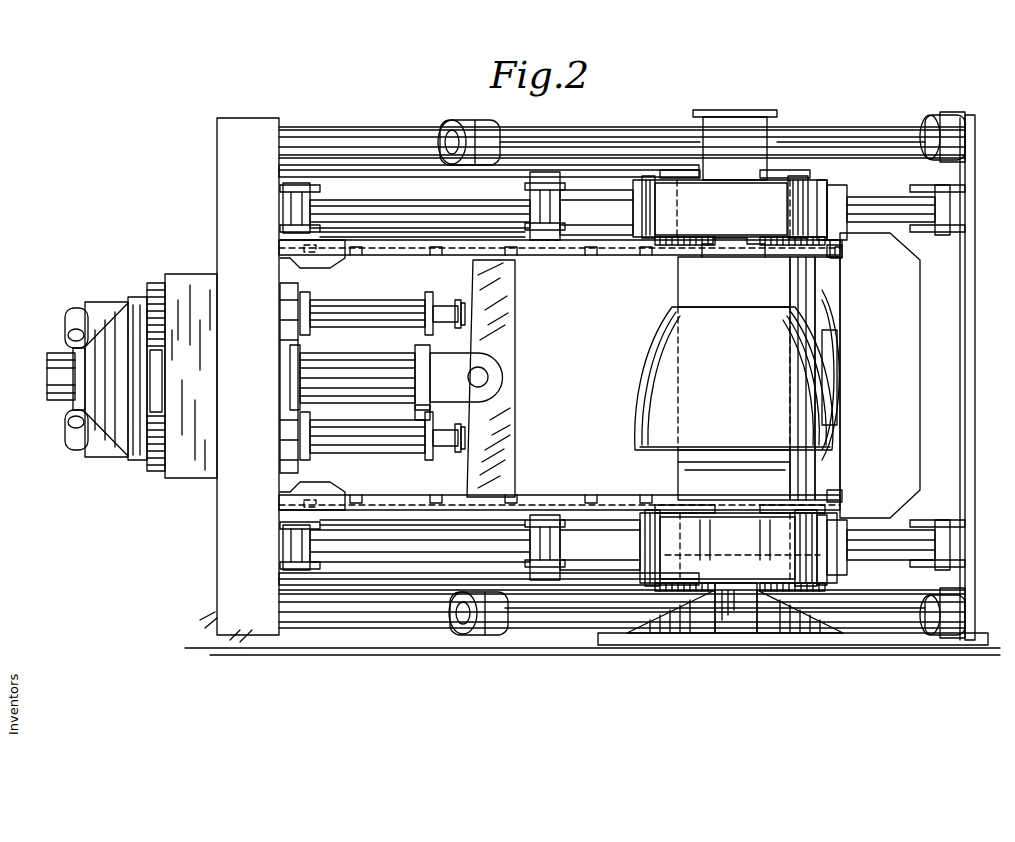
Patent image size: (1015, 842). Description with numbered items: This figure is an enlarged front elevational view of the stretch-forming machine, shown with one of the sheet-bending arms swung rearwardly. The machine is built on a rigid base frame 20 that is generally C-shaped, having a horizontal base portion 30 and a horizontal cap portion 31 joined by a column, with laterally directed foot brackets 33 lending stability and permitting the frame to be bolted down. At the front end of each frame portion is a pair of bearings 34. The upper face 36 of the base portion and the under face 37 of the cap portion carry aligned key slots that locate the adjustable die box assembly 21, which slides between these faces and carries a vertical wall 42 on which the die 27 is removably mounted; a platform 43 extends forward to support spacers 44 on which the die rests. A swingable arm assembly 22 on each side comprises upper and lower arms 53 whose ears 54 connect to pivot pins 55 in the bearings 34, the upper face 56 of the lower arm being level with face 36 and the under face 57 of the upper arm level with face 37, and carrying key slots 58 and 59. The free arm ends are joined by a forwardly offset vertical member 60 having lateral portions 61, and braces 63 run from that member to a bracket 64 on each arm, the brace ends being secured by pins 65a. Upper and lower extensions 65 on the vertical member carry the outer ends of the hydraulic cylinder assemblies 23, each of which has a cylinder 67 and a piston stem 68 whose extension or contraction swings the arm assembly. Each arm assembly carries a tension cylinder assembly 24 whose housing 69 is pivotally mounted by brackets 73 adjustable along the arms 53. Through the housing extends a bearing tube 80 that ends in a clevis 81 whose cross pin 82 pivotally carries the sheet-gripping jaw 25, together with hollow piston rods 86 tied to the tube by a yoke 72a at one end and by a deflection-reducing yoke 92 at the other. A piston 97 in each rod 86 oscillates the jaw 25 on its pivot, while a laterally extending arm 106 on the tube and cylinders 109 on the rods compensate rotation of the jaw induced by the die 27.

The rigid base frame 20 is at (757, 108).
The adjustable die box assembly 21 is at (678, 286).
The swingable arm assembly 22 is at (975, 330).
The hydraulic cylinder assembly 23 is at (477, 130).
The tension cylinder assembly 24 is at (203, 272).
The sheet-gripping jaw 25 is at (508, 420).
The die 27 is at (652, 372).
The base portion 30 is at (735, 635).
The cap portion 31 is at (735, 125).
The foot bracket 33 is at (655, 645).
The bearing 34 is at (825, 185).
The upper face of base portion 36 is at (770, 494).
The under face of cap portion 37 is at (715, 246).
The vertical wall 42 is at (688, 292).
The platform 43 is at (725, 504).
The spacer 44 is at (690, 468).
The arm 53 is at (382, 160).
The ear 54 is at (672, 245).
The pivot pin 55 is at (668, 208).
The upper face of lower arm 56 is at (583, 502).
The under face of upper arm 57 is at (556, 256).
The key slot 58 is at (427, 507).
The key slot 59 is at (425, 252).
The vertical member 60 is at (220, 209).
The lateral portion 61 is at (860, 180).
The brace 63 is at (450, 200).
The bracket 64 is at (600, 238).
The extension 65 is at (970, 118).
The pin 65a is at (300, 212).
The cylinder 67 is at (608, 130).
The stem 68 is at (338, 135).
The housing 69 is at (190, 478).
The yoke 72a is at (128, 405).
The bracket 73 is at (313, 262).
The bearing tube 80 is at (372, 362).
The clevis 81 is at (500, 360).
The cross pin 82 is at (490, 380).
The hollow piston rod 86 is at (342, 462).
The deflection-reducing yoke 92 is at (415, 412).
The piston 97 is at (440, 308).
The laterally extending arm 106 is at (65, 372).
The cylinder 109 is at (82, 308).